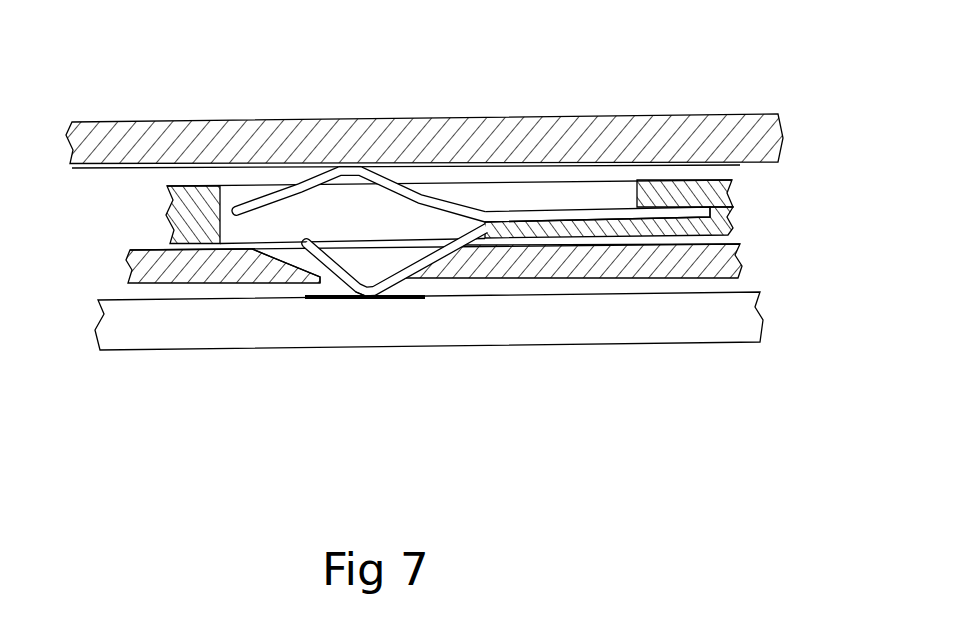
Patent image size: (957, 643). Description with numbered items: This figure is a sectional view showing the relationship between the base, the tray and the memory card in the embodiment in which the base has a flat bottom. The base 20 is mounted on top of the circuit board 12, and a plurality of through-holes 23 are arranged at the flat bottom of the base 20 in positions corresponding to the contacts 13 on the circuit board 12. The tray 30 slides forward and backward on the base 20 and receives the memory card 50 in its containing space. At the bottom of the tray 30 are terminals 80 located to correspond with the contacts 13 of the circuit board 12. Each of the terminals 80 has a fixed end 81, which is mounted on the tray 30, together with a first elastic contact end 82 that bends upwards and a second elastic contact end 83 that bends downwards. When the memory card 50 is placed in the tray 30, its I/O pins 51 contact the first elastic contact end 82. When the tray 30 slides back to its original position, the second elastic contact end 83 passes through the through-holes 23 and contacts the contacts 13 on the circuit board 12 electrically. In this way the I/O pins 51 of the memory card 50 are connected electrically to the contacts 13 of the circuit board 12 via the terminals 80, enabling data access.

The circuit board 12 is at (588, 332).
The contacts 13 is at (405, 299).
The base 20 is at (122, 272).
The through-holes 23 is at (282, 254).
The tray 30 is at (742, 206).
The memory card 50 is at (438, 121).
The I/O pins 51 is at (145, 163).
The terminals 80 is at (282, 172).
The fixed end 81 is at (575, 215).
The first elastic contact end 82 is at (340, 166).
The second elastic contact end 83 is at (348, 284).